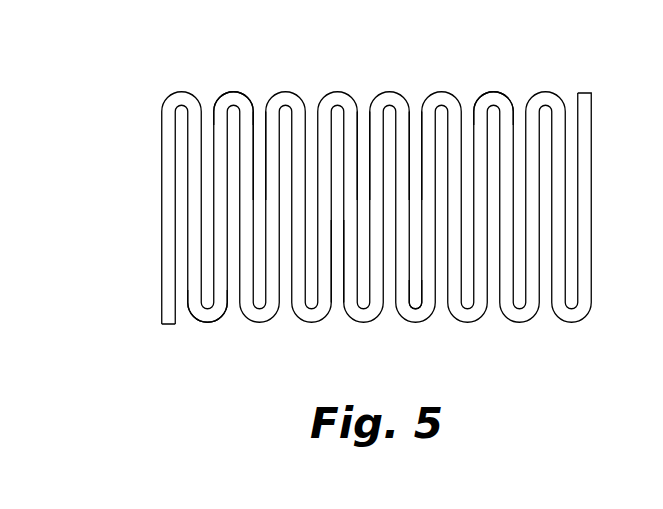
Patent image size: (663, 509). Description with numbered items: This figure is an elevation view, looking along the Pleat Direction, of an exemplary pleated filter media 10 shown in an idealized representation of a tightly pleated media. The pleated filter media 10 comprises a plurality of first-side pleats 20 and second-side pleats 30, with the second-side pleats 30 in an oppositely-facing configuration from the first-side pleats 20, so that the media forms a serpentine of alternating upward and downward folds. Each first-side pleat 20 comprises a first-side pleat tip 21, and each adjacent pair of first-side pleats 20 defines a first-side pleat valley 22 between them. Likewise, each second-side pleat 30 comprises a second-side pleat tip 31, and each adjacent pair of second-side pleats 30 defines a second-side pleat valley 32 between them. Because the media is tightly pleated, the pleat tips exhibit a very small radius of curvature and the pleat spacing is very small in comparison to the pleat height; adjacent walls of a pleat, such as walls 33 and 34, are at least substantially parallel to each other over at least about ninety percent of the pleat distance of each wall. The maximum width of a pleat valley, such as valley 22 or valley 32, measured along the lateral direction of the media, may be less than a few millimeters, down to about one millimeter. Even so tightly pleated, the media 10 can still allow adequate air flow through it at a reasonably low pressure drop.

The pleated filter media 10 is at (146, 44).
The first-side pleat 20 is at (417, 310).
The first-side pleat tip 21 is at (210, 322).
The first-side pleat valley 22 is at (340, 288).
The second-side pleat 30 is at (235, 95).
The second-side pleat tip 31 is at (493, 92).
The second-side pleat valley 32 is at (259, 125).
The pleat wall 33 is at (363, 117).
The pleat wall 34 is at (415, 115).